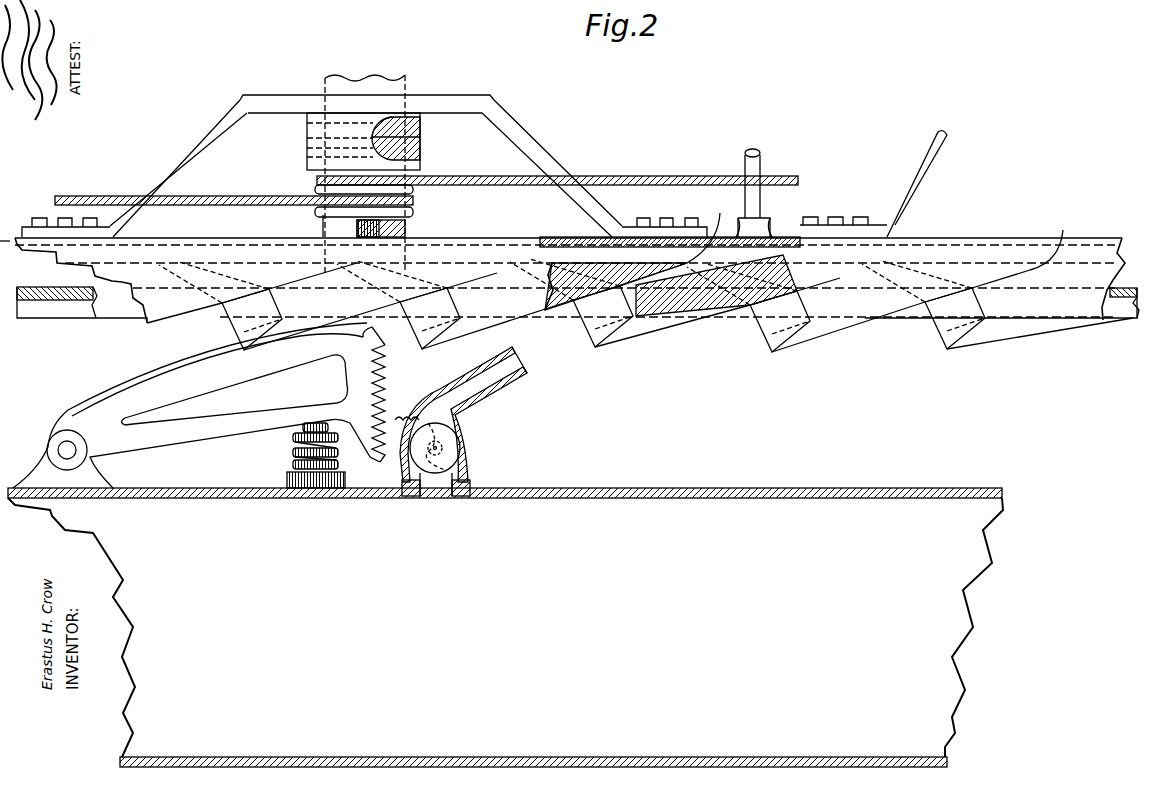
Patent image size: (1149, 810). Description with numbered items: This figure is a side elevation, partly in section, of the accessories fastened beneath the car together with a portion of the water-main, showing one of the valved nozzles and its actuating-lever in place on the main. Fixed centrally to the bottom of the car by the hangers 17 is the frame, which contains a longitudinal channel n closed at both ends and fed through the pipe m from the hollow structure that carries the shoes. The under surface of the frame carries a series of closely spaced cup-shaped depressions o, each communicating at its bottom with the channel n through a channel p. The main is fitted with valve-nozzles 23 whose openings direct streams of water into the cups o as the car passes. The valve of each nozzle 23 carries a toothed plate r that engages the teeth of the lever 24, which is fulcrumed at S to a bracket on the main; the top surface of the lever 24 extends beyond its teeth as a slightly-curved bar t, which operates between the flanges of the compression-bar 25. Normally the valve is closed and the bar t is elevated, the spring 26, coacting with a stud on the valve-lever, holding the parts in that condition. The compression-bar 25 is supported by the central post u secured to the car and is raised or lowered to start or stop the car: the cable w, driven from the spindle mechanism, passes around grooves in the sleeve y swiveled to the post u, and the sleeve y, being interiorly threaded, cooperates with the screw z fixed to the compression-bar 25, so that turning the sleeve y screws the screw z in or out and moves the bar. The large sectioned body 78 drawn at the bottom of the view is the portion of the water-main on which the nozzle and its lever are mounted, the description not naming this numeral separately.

The hangers 17 is at (197, 147).
The central post u is at (367, 168).
The cable w is at (434, 180).
The pipe m is at (762, 156).
The sleeve y is at (323, 222).
The screw z is at (410, 228).
The channel p is at (879, 234).
The longitudinal channel n is at (562, 279).
The compression-bar 25 is at (578, 294).
The slightly-curved bar t is at (563, 322).
The cup-shaped depressions o is at (420, 345).
The toothed plate r is at (400, 407).
The valve-nozzles 23 is at (480, 405).
The lever 24 is at (163, 437).
The fulcrum S is at (57, 448).
The spring 26 is at (330, 482).
The base bed 78 is at (505, 627).